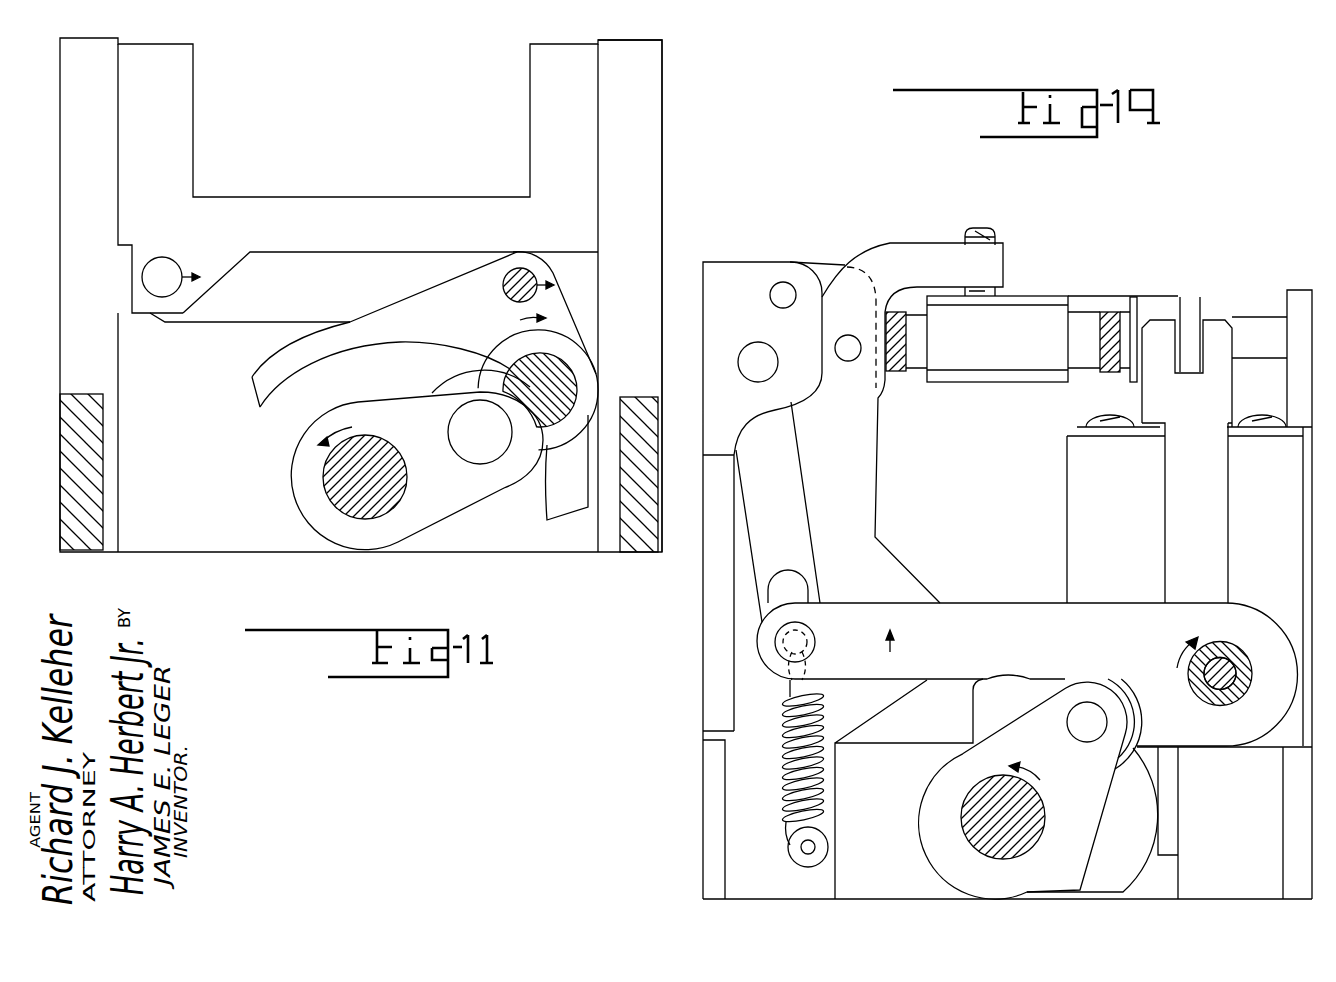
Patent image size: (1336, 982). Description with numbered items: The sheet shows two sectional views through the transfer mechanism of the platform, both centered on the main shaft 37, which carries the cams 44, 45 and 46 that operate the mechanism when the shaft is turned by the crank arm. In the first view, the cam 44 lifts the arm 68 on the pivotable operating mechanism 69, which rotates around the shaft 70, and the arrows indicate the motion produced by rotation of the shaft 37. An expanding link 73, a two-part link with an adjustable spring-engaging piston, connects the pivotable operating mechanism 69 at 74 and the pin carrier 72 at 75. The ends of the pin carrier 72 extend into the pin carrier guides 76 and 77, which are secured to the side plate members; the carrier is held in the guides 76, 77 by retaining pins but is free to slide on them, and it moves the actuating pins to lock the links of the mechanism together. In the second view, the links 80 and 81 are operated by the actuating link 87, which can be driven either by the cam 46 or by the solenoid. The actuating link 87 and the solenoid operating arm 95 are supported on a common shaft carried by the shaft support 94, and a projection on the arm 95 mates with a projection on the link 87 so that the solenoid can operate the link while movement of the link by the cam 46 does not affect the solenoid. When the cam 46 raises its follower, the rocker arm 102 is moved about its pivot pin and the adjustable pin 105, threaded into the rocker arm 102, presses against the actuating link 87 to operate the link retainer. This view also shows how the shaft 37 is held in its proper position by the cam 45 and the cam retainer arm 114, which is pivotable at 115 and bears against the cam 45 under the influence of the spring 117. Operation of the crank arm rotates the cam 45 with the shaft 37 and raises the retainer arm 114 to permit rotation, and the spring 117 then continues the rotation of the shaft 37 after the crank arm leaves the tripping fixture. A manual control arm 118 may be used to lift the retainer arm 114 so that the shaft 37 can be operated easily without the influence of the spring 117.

In FIG. 11, the main shaft 37 is at (390, 457).
In FIG. 19, the main shaft 37 is at (1045, 806).
In FIG. 11, the cam 44 is at (437, 513).
In FIG. 19, the cam 45 is at (928, 833).
In FIG. 19, the cam 46 is at (1090, 893).
In FIG. 11, the arm 68 is at (290, 377).
In FIG. 11, the pivotable operating mechanism 69 is at (560, 515).
In FIG. 11, the shaft 70 is at (566, 362).
In FIG. 11, the pin carrier 72 is at (538, 97).
In FIG. 11, the expanding link 73 is at (223, 320).
In FIG. 11, the connection point 74 is at (528, 270).
In FIG. 11, the connection point 75 is at (164, 258).
In FIG. 11, the pin carrier guide 76 is at (653, 77).
In FIG. 11, the pin carrier guide 77 is at (107, 363).
In FIG. 19, the link 80 is at (900, 308).
In FIG. 19, the link 81 is at (1108, 310).
In FIG. 19, the actuating link 87 is at (1037, 297).
In FIG. 19, the shaft support 94 is at (1297, 290).
In FIG. 19, the solenoid operating arm 95 is at (1198, 297).
In FIG. 19, the rocker arm 102 is at (910, 228).
In FIG. 19, the adjustable pin 105 is at (1000, 215).
In FIG. 19, the cam retainer arm 114 is at (967, 606).
In FIG. 19, the pivot 115 is at (1237, 655).
In FIG. 19, the spring 117 is at (783, 777).
In FIG. 19, the manual control arm 118 is at (707, 620).